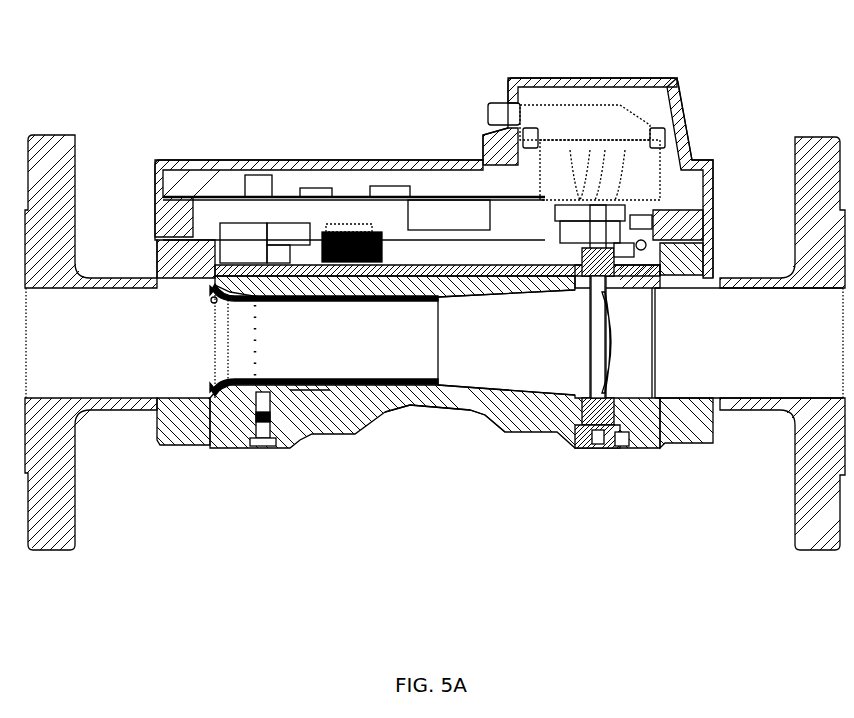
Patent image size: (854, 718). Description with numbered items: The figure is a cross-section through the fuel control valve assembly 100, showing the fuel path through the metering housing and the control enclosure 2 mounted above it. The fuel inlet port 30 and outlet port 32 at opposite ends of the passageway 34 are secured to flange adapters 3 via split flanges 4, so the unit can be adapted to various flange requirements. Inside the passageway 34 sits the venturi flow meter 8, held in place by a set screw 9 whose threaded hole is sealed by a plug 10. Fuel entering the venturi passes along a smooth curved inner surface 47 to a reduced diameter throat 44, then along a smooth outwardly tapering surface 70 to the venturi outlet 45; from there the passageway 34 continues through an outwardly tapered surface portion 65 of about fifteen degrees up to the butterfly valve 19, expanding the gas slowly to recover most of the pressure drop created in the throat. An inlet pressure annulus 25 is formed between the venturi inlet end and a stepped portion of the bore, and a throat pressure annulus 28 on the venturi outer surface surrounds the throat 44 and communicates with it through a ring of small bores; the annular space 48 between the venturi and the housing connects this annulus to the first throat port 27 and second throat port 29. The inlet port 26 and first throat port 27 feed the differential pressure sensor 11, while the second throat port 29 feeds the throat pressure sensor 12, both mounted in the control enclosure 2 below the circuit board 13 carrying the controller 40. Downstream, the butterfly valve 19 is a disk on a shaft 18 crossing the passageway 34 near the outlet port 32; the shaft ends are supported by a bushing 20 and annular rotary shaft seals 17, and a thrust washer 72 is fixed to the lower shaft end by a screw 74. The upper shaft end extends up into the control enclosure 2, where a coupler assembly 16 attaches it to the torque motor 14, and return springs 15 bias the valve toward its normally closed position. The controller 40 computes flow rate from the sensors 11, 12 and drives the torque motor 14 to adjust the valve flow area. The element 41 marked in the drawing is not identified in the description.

The fuel control valve assembly 100 is at (226, 66).
The control enclosure 2 is at (434, 183).
The flange adapters 3 is at (435, 380).
The split flanges 4 is at (436, 437).
The venturi flow meter 8 is at (435, 367).
The set screw 9 is at (216, 452).
The plug 10 is at (247, 475).
The differential pressure sensor 11 is at (222, 178).
The throat pressure sensor 12 is at (372, 178).
The circuit board 13 is at (279, 149).
The torque motor 14 is at (598, 118).
The return springs 15 is at (661, 182).
The coupler assembly 16 is at (640, 237).
The annular rotary shaft seal 17 is at (687, 343).
The shaft 18 is at (572, 365).
The butterfly valve 19 is at (557, 397).
The bushing 20 is at (698, 370).
The inlet pressure annulus 25 is at (212, 293).
The inlet port 26 is at (192, 313).
The first throat port 27 is at (349, 317).
The throat pressure annulus 28 is at (325, 318).
The second throat port 29 is at (393, 332).
The fuel inlet port 30 is at (212, 343).
The outlet port 32 is at (744, 343).
The passageway 34 is at (501, 431).
The controller 40 is at (401, 149).
The throat 41 is at (433, 432).
The throat 44 is at (211, 342).
The venturi outlet 45 is at (419, 380).
The curved inner surface 47 is at (212, 387).
The annular space 48 is at (325, 444).
The outwardly tapered surface portion 65 is at (533, 293).
The outwardly tapering surface 70 is at (322, 434).
The thrust washer 72 is at (630, 472).
The screw 74 is at (622, 490).